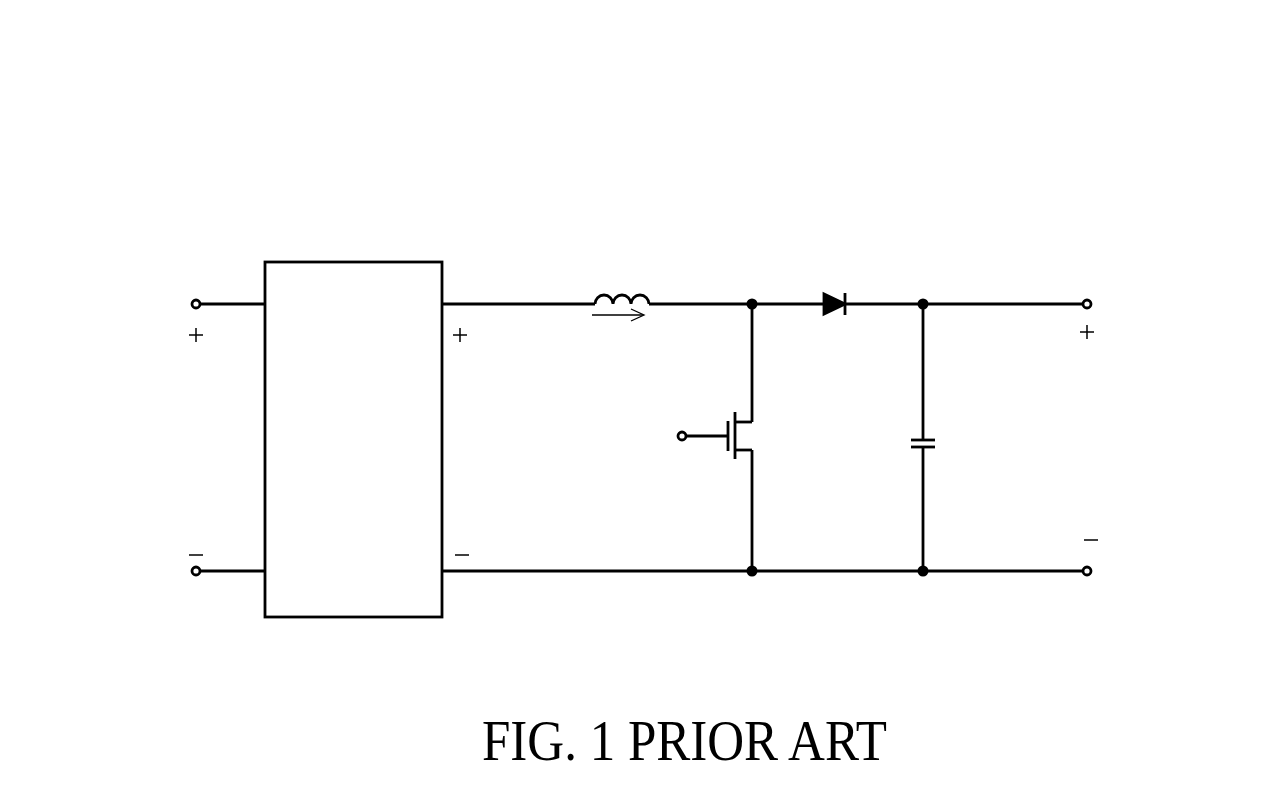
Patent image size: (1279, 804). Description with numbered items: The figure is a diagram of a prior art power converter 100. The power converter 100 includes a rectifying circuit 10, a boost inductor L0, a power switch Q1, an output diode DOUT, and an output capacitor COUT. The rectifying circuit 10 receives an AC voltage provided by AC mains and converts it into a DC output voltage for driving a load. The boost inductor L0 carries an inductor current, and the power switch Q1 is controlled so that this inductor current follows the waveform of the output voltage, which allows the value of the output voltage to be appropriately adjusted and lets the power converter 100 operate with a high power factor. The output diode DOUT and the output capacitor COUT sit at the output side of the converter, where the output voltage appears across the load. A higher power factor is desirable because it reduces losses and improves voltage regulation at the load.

The power converter 100 is at (1115, 110).
The rectifying circuit 10 is at (285, 262).
The boost inductor L0 is at (622, 284).
The power switch Q1 is at (754, 439).
The output diode DOUT is at (838, 293).
The output capacitor COUT is at (926, 444).